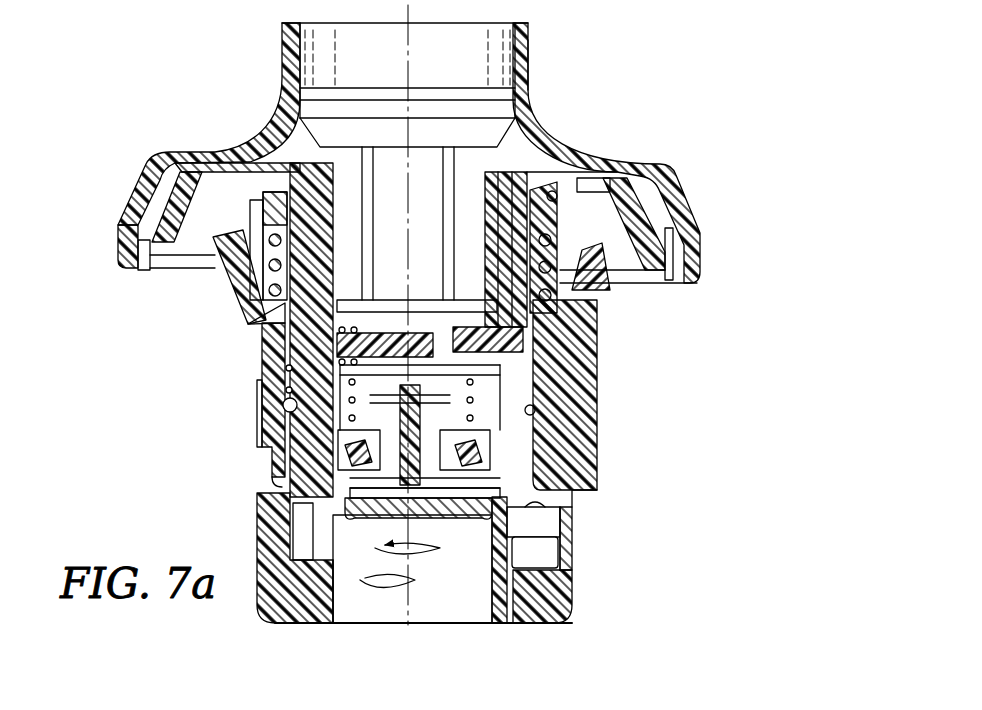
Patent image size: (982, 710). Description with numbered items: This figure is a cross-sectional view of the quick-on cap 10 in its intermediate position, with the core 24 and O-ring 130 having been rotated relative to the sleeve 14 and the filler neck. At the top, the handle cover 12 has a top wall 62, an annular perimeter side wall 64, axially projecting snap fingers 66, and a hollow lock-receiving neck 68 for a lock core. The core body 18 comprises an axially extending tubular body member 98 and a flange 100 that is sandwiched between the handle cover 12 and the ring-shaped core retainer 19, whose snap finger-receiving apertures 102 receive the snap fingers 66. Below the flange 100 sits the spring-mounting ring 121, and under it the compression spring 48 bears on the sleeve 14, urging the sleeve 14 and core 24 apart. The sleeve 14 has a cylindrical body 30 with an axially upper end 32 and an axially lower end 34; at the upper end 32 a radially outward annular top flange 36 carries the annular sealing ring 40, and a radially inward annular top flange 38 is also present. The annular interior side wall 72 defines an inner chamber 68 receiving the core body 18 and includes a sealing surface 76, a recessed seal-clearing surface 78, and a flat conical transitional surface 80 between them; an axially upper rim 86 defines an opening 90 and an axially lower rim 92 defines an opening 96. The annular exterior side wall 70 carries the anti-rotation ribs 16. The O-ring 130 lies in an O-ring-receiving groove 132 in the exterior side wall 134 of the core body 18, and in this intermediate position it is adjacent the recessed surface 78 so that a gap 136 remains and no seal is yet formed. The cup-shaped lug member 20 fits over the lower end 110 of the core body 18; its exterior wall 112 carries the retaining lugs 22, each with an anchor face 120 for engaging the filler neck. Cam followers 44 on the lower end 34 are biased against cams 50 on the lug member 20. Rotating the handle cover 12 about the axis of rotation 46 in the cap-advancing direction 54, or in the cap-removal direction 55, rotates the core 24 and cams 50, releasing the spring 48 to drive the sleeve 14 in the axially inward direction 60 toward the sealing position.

The quick-on cap 10 is at (681, 128).
The handle cover 12 is at (547, 117).
The sleeve 14 is at (606, 399).
The ribs 16 is at (598, 477).
The core body 18 is at (268, 322).
The core retainer 19 is at (697, 287).
The lug member 20 is at (584, 582).
The retaining lugs 22 is at (567, 608).
The core 24 is at (293, 631).
The cylindrical body 30 is at (270, 348).
The axially upper end 32 is at (588, 285).
The axially lower end 34 is at (270, 449).
The annular top flange 36 is at (584, 255).
The annular top flange 38 is at (541, 293).
The annular sealing ring 40 is at (220, 277).
The cam follower 44 is at (548, 490).
The axis of rotation 46 is at (410, 600).
The compression spring 48 is at (270, 240).
The cam 50 is at (268, 508).
The cap-advancing direction 54 is at (400, 580).
The cap-removal direction 55 is at (430, 556).
The axially inward direction 60 is at (748, 374).
The top wall 62 is at (625, 163).
The annular perimeter side wall 64 is at (686, 232).
The snap fingers 66 is at (143, 262).
The lock-receiving neck 68 is at (531, 68).
The annular exterior side wall 70 is at (266, 428).
The annular interior side wall 72 is at (285, 370).
The sealing surface 76 is at (583, 376).
The recessed surface 78 is at (598, 466).
The transitional surface 80 is at (590, 408).
The axially upper rim 86 is at (588, 178).
The opening 90 is at (555, 191).
The axially lower rim 92 is at (560, 545).
The opening 96 is at (543, 550).
The tubular body member 98 is at (522, 222).
The flange 100 is at (213, 162).
The snap finger-receiving apertures 102 is at (165, 225).
The lower end 110 is at (340, 595).
The exterior wall 112 is at (262, 603).
The anchor face 120 is at (575, 505).
The spring-mounting ring 121 is at (296, 150).
The O-ring 130 is at (583, 433).
The O-ring-receiving groove 132 is at (285, 391).
The exterior side wall 134 is at (285, 480).
The gap 136 is at (281, 406).